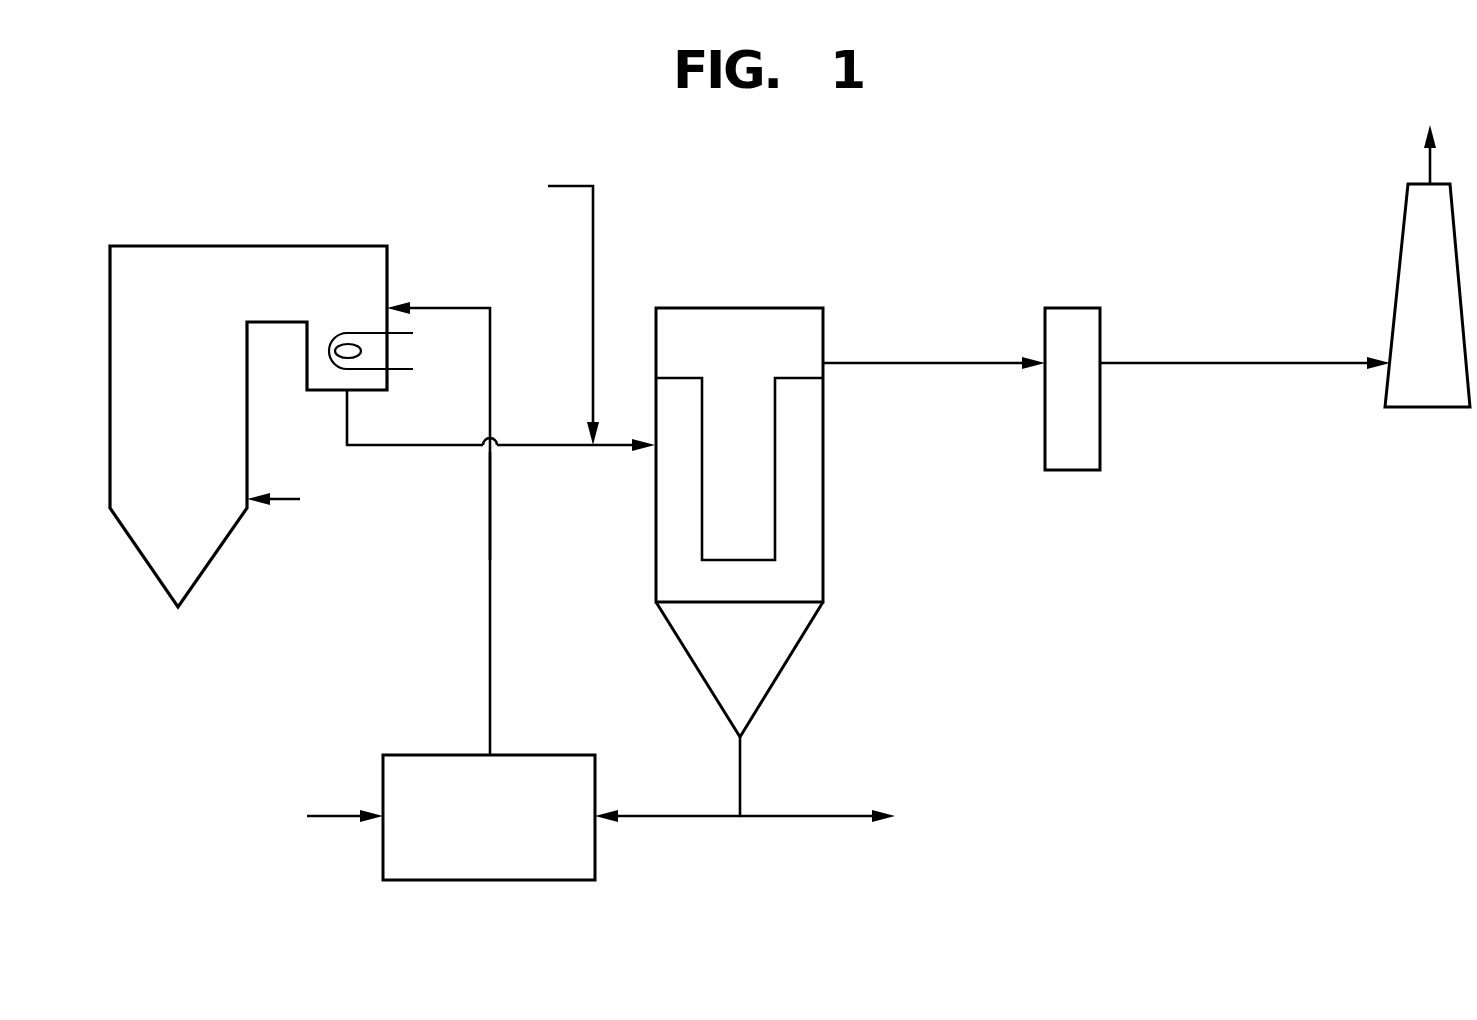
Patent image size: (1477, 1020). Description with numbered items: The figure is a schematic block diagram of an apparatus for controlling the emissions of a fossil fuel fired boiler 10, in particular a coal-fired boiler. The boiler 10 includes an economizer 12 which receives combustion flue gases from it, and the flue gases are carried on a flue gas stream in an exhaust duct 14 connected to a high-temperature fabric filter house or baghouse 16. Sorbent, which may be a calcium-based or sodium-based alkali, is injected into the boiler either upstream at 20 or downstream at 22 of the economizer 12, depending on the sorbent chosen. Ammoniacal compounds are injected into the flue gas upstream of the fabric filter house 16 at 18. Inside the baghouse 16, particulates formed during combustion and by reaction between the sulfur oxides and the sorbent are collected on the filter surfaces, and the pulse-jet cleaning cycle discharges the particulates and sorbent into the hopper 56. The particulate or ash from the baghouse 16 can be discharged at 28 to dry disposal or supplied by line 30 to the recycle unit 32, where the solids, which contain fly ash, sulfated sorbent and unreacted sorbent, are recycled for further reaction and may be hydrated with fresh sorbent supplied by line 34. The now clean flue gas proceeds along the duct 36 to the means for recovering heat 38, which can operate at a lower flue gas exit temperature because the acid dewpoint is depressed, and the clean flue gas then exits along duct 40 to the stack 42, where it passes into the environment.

The fossil fuel fired boiler 10 is at (163, 246).
The economizer 12 is at (387, 343).
The exhaust duct 14 is at (404, 445).
The fabric filter house 16 is at (712, 308).
The ammoniacal compound injection point 18 is at (596, 228).
The upstream sorbent injection point 20 is at (450, 308).
The downstream sorbent injection point 22 is at (489, 532).
The dry disposal discharge 28 is at (783, 816).
The recycle line 30 is at (683, 816).
The recycle unit 32 is at (538, 755).
The fresh sorbent line 34 is at (327, 820).
The duct 36 is at (926, 363).
The means for recovering heat 38 is at (1085, 312).
The duct 40 is at (1228, 363).
The stack 42 is at (1405, 213).
The hopper 56 is at (787, 660).